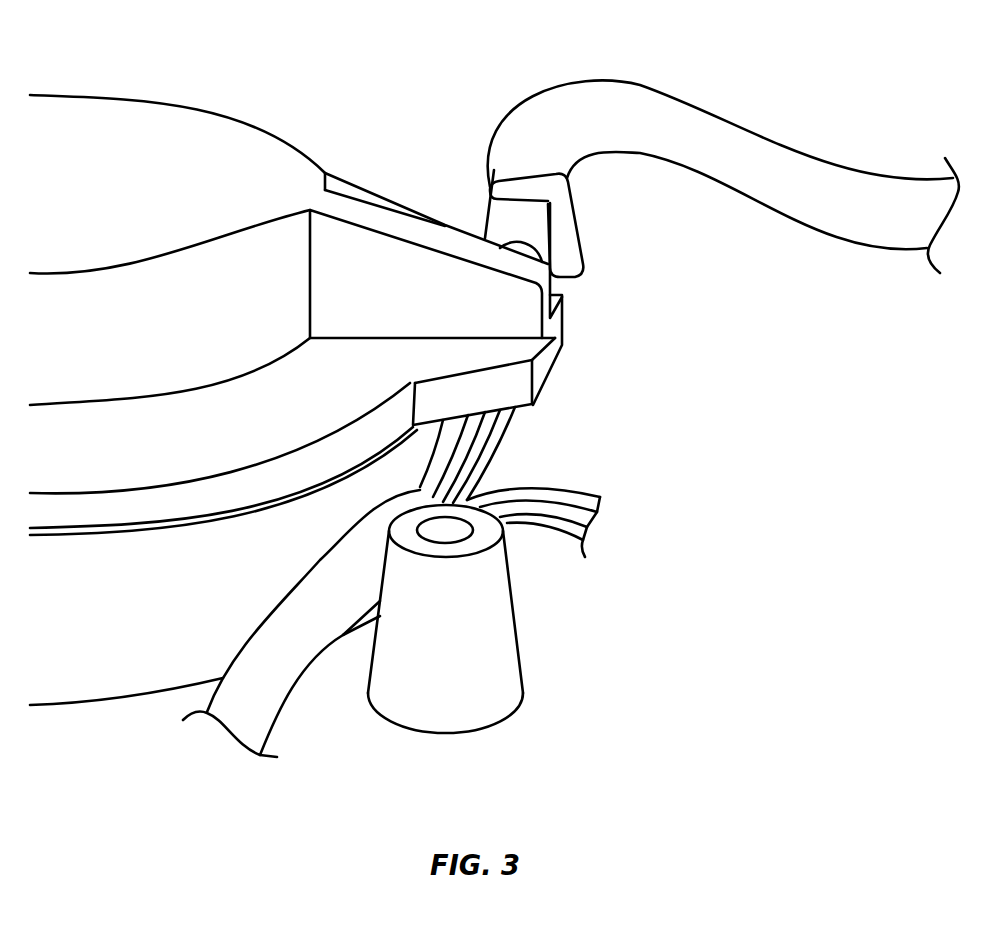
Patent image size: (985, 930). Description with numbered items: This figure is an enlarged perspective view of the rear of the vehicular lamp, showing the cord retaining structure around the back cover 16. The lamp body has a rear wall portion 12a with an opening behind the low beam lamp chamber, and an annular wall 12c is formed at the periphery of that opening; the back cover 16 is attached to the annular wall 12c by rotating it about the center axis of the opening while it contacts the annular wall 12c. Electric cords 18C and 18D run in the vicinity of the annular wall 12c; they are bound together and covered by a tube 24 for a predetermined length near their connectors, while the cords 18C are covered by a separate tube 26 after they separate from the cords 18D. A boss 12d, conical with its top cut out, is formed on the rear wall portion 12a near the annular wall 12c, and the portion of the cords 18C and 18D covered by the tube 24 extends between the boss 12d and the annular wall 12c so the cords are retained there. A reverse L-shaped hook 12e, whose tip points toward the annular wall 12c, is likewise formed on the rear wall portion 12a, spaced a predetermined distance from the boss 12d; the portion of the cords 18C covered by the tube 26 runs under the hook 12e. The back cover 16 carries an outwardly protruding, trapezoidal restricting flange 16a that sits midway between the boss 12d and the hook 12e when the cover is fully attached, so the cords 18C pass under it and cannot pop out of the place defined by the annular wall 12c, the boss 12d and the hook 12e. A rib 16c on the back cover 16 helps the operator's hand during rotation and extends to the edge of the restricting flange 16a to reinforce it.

The back cover 16 is at (223, 110).
The rib 16c is at (457, 240).
The restricting flange 16a is at (552, 338).
The hook 12e is at (568, 242).
The tube 26 is at (750, 152).
The electric cords 18C is at (522, 438).
The electric cords 18D is at (570, 480).
The annular wall 12c is at (258, 547).
The rear wall portion 12a is at (125, 732).
The tube 24 is at (263, 648).
The boss 12d is at (495, 637).